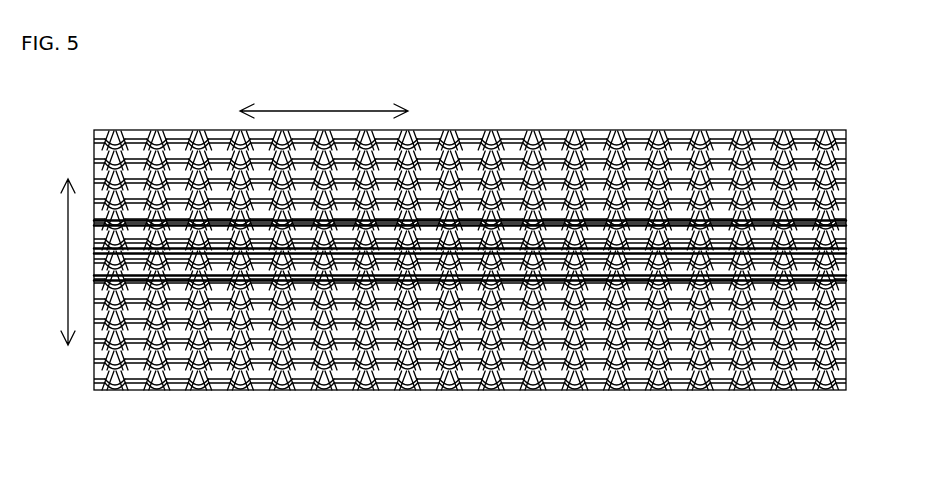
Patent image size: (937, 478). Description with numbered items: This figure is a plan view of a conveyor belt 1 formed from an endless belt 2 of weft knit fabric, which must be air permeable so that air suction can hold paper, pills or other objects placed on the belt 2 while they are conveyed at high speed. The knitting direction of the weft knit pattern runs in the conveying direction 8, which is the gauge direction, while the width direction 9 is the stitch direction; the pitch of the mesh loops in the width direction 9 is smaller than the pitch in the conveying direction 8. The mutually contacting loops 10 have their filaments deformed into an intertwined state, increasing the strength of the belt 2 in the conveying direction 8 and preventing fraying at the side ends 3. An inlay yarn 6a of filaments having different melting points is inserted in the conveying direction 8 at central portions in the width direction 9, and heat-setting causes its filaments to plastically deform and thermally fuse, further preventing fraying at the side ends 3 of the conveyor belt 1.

The conveyor belt 1 is at (476, 268).
The belt 2 is at (476, 268).
The side ends 3 is at (274, 381).
The inlay yarn 6a is at (747, 213).
The conveying direction 8 is at (332, 103).
The width direction 9 is at (60, 238).
The loops 10 is at (605, 126).